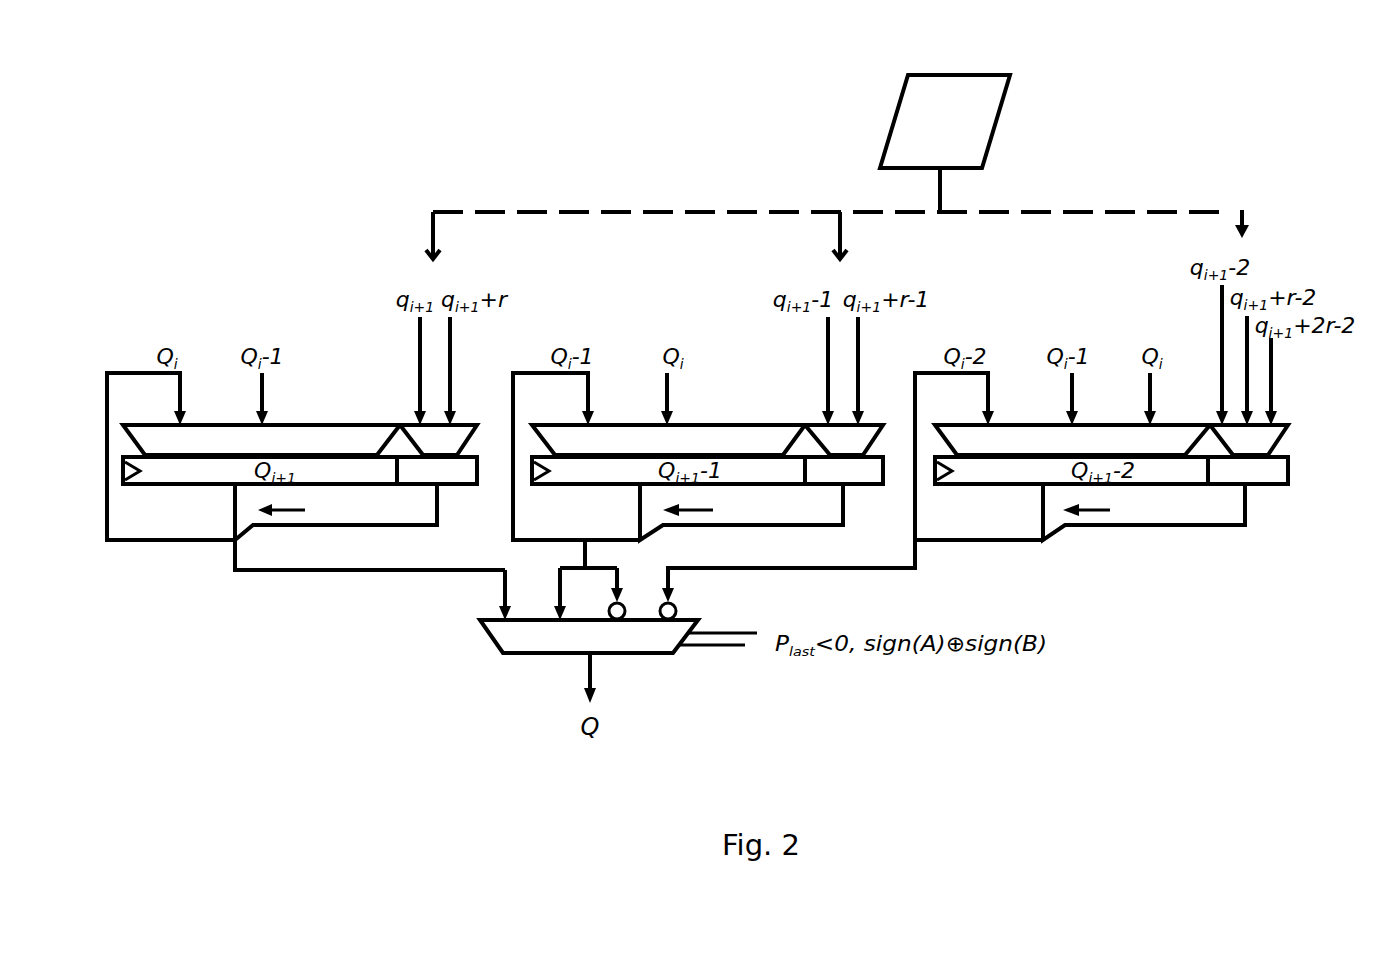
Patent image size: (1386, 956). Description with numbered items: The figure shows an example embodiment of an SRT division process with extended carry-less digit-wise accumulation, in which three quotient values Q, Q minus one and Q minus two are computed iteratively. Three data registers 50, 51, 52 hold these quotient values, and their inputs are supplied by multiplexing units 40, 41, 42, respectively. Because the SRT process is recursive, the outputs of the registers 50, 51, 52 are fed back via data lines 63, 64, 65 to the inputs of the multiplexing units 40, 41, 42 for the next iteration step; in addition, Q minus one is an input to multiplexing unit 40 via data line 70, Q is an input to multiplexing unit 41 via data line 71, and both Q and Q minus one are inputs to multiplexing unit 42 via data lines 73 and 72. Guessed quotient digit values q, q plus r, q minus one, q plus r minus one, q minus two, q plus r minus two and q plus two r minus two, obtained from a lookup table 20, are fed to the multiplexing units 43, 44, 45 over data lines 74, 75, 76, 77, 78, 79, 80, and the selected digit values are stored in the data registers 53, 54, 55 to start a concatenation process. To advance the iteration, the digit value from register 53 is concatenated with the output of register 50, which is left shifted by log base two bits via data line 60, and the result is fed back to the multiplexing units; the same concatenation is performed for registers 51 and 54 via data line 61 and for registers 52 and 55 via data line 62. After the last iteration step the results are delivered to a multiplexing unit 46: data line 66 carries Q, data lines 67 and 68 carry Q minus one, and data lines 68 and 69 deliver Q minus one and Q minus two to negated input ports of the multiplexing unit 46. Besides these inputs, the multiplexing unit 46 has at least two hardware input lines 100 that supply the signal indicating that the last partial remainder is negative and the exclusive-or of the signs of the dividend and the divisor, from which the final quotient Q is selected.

The lookup table 20 is at (1000, 131).
The multiplexing unit 40 is at (180, 452).
The multiplexing unit 41 is at (590, 452).
The multiplexing unit 42 is at (995, 452).
The multiplexing unit 43 is at (424, 452).
The multiplexing unit 44 is at (830, 452).
The multiplexing unit 45 is at (1234, 452).
The multiplexing unit 46 is at (577, 649).
The data register 50 is at (180, 483).
The data register 51 is at (590, 483).
The data register 52 is at (995, 483).
The data register 53 is at (424, 483).
The data register 54 is at (830, 483).
The data register 55 is at (1234, 483).
The data line 60 is at (335, 527).
The data line 61 is at (760, 527).
The data line 62 is at (1153, 527).
The data line 63 is at (124, 376).
The data line 64 is at (534, 376).
The data line 65 is at (925, 375).
The data line 66 is at (290, 572).
The data line 67 is at (505, 593).
The data line 68 is at (617, 582).
The data line 69 is at (905, 572).
The data line 70 is at (262, 406).
The data line 71 is at (667, 404).
The data line 72 is at (1072, 380).
The data line 73 is at (1150, 380).
The data line 74 is at (420, 334).
The data line 75 is at (450, 349).
The data line 76 is at (828, 343).
The data line 77 is at (862, 348).
The data line 78 is at (1222, 296).
The data line 79 is at (1247, 373).
The data line 80 is at (1271, 398).
The hardware input lines 100 is at (715, 633).